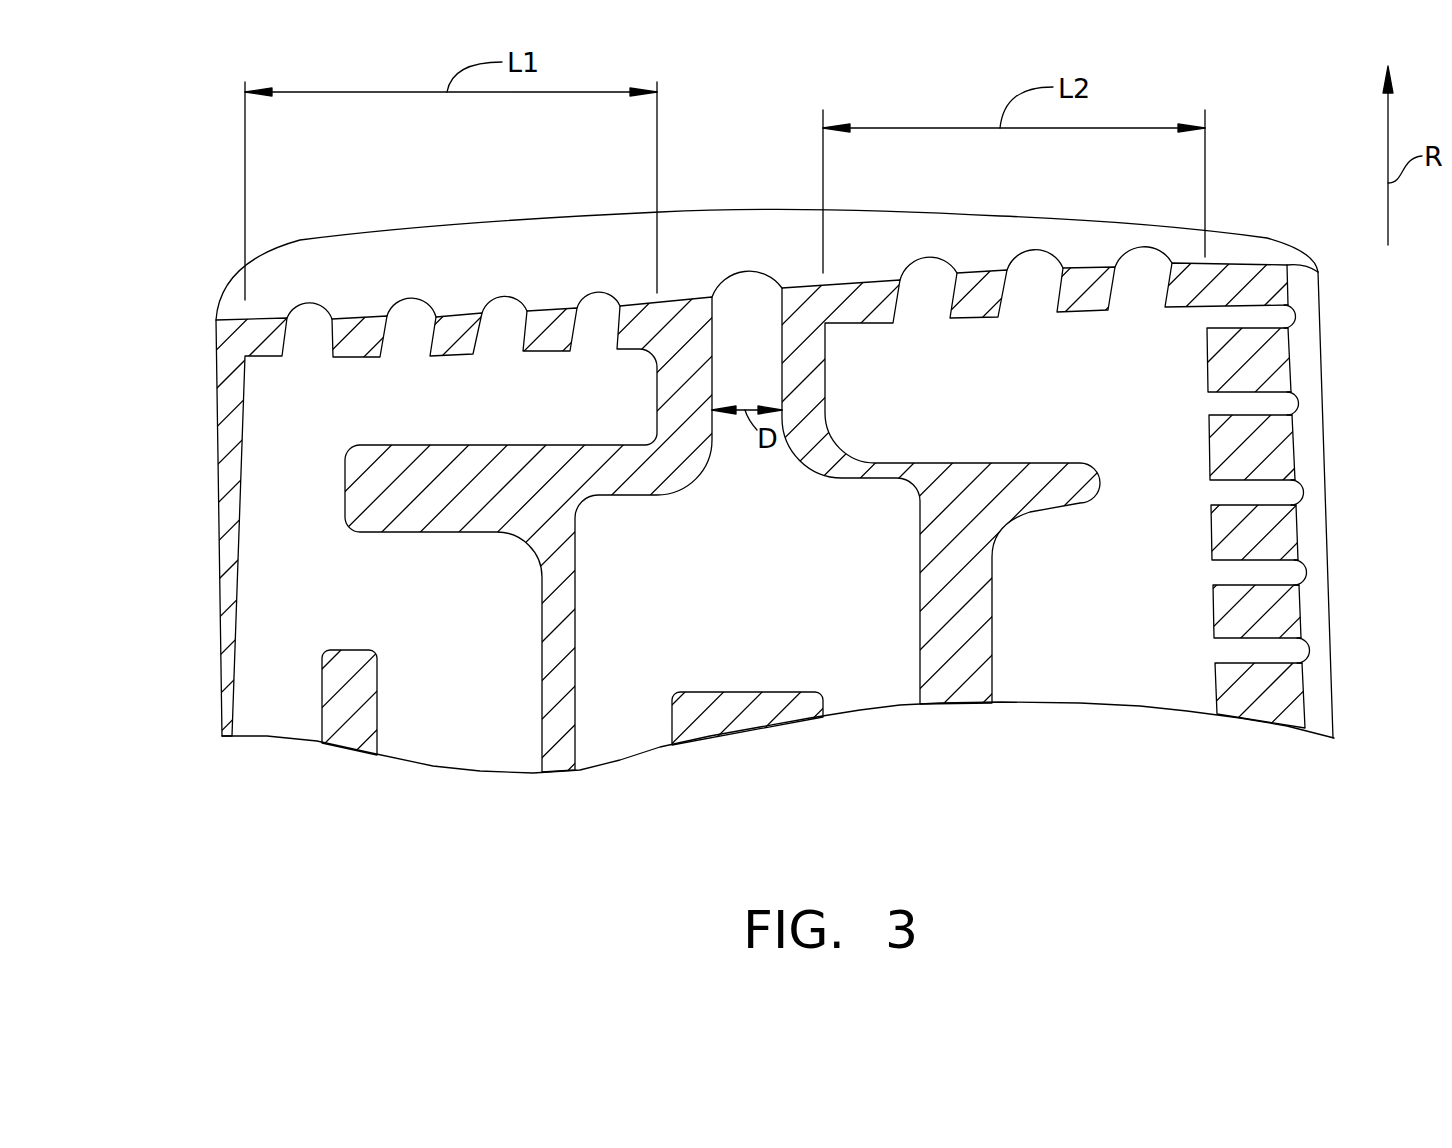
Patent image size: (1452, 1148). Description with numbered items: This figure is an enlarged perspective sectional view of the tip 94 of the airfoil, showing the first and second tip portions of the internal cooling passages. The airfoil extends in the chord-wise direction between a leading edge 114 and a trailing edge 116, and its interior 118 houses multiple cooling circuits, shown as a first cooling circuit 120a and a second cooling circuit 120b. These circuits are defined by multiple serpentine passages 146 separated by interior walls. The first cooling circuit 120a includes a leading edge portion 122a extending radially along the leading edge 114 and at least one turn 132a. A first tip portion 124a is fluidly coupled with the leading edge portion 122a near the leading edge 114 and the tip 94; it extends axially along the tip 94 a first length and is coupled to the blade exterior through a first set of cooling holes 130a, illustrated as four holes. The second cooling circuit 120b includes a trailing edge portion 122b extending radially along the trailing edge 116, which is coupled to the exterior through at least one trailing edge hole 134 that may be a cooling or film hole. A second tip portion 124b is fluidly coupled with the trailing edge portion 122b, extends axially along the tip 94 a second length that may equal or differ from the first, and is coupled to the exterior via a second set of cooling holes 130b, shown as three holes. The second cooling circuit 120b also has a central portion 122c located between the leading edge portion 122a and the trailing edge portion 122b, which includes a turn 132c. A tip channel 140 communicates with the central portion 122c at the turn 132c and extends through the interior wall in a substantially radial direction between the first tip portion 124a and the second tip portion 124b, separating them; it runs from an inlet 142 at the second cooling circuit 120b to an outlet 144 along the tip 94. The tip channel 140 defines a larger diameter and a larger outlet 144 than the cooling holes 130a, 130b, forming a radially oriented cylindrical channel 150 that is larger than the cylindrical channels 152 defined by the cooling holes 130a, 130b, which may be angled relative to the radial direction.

The tip 94 is at (997, 230).
The leading edge 114 is at (217, 322).
The trailing edge 116 is at (1330, 607).
The interior 118 is at (890, 665).
The first cooling circuit 120a is at (273, 573).
The second cooling circuit 120b is at (1307, 528).
The leading edge portion 122a is at (277, 706).
The trailing edge portion 122b is at (1128, 624).
The central portion 122c is at (780, 638).
The first tip portion 124a is at (478, 404).
The second tip portion 124b is at (1030, 406).
The first set of cooling holes 130a is at (412, 327).
The second set of cooling holes 130b is at (1037, 268).
The turn 132a is at (378, 637).
The turn 132c is at (685, 662).
The trailing edge hole 134 is at (1297, 398).
The tip channel 140 is at (700, 290).
The inlet 142 is at (733, 455).
The outlet 144 is at (747, 295).
The serpentine passages 146 is at (270, 727).
The cylindrical channel 150 is at (748, 350).
The cylindrical channels 152 is at (410, 327).